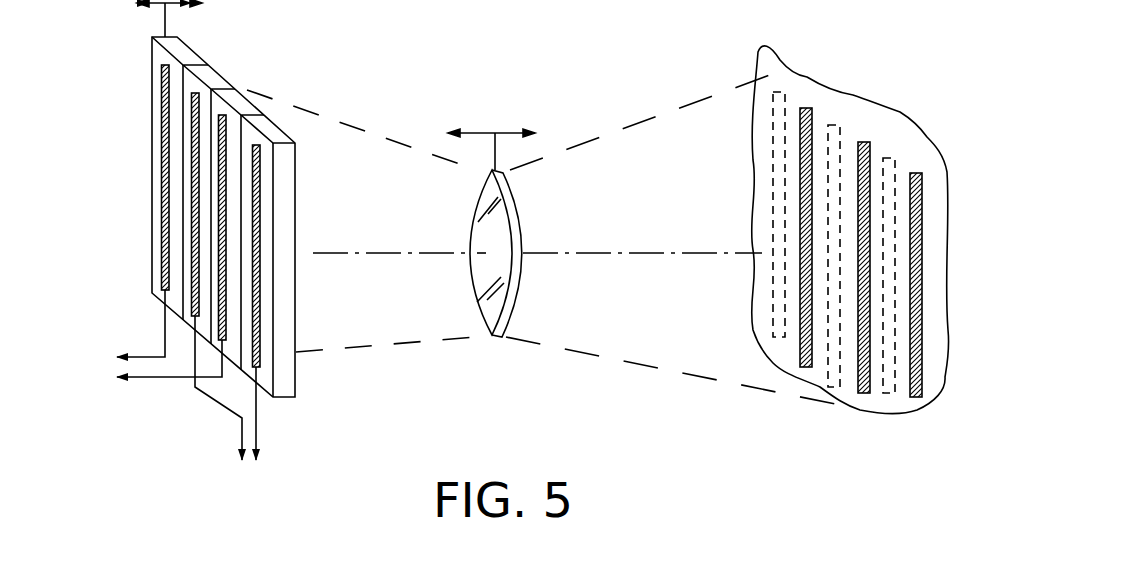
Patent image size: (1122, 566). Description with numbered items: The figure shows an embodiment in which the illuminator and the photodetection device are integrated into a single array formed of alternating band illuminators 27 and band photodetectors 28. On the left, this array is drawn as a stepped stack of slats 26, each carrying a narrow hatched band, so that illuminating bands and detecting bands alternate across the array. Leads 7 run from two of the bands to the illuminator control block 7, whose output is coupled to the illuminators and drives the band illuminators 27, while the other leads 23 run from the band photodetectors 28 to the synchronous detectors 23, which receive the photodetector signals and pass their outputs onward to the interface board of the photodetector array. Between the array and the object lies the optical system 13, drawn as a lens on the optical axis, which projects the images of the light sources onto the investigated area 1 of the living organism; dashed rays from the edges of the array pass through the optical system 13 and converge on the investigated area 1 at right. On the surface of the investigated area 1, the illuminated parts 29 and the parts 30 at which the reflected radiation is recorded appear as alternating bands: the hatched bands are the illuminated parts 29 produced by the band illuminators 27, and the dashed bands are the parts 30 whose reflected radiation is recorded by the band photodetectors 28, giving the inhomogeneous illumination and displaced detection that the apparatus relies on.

The investigated area 1 is at (935, 260).
The illuminator control block 7 is at (159, 336).
The optical system 13 is at (512, 195).
The synchronous detectors 23 is at (235, 402).
The slit plate slats 26 is at (277, 127).
The band illuminators 27 is at (218, 188).
The band photodetectors 28 is at (255, 303).
The illuminated parts 29 is at (917, 397).
The parts at which reflected radiation is recorded 30 is at (837, 393).